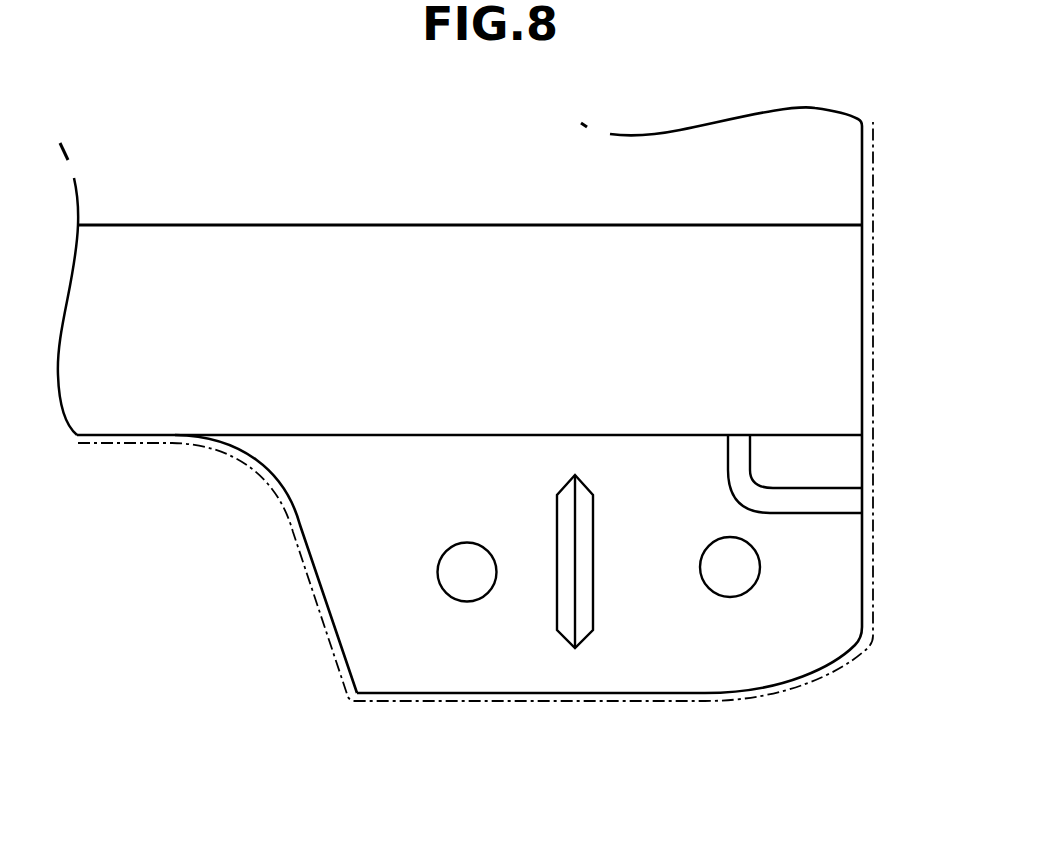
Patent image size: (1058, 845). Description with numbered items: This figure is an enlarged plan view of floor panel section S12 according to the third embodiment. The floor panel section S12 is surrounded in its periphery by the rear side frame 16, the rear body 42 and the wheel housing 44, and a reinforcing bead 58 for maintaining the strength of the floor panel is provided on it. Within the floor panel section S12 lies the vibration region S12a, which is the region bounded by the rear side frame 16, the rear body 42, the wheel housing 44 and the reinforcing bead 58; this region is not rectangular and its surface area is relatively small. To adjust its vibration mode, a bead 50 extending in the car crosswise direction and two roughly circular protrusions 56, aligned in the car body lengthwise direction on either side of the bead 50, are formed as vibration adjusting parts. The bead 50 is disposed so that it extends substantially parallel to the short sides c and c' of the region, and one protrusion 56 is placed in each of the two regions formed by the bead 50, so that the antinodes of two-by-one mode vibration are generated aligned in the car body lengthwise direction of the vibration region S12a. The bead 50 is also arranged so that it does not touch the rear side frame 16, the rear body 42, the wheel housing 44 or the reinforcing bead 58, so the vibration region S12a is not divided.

The rear side frame 16 is at (318, 225).
The rear body 42 is at (553, 706).
The wheel housing 44 is at (222, 455).
The bead 50 is at (575, 475).
The protrusions 56 is at (450, 597).
The reinforcing bead 58 is at (803, 490).
The floor panel section S12 is at (457, 627).
The vibration region S12a is at (768, 636).
The short side c is at (313, 609).
The short side c' is at (904, 562).